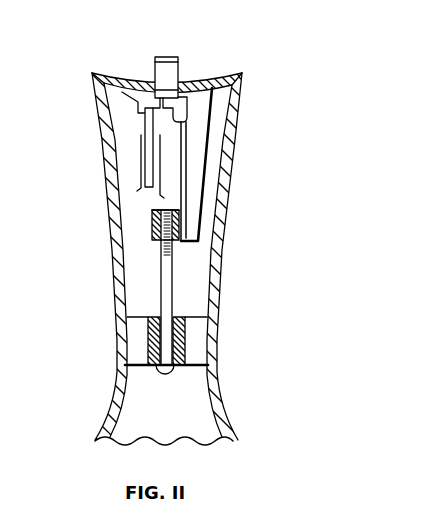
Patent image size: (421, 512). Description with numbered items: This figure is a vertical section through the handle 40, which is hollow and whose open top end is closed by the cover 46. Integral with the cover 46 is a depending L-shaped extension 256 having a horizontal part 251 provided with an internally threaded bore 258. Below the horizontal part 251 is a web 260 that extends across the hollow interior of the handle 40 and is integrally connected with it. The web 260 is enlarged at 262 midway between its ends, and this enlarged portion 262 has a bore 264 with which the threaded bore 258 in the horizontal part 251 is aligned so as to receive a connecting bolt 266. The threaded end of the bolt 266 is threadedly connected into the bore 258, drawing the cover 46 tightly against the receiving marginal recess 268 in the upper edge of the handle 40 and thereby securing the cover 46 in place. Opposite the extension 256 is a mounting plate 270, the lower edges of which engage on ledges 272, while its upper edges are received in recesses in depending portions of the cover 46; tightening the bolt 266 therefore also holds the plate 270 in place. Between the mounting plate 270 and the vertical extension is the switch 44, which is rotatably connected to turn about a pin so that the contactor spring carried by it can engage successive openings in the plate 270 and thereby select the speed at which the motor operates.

The handle 40 is at (222, 238).
The switch 44 is at (178, 58).
The cover 46 is at (115, 73).
The horizontal part 251 is at (152, 211).
The L-shaped extension 256 is at (196, 162).
The internally threaded bore 258 is at (153, 228).
The web 260 is at (198, 338).
The enlarged portion of web 262 is at (150, 354).
The bore 264 is at (160, 334).
The connecting bolt 266 is at (162, 280).
The marginal recess 268 is at (124, 74).
The mounting plate 270 is at (140, 128).
The ledges 272 is at (138, 160).